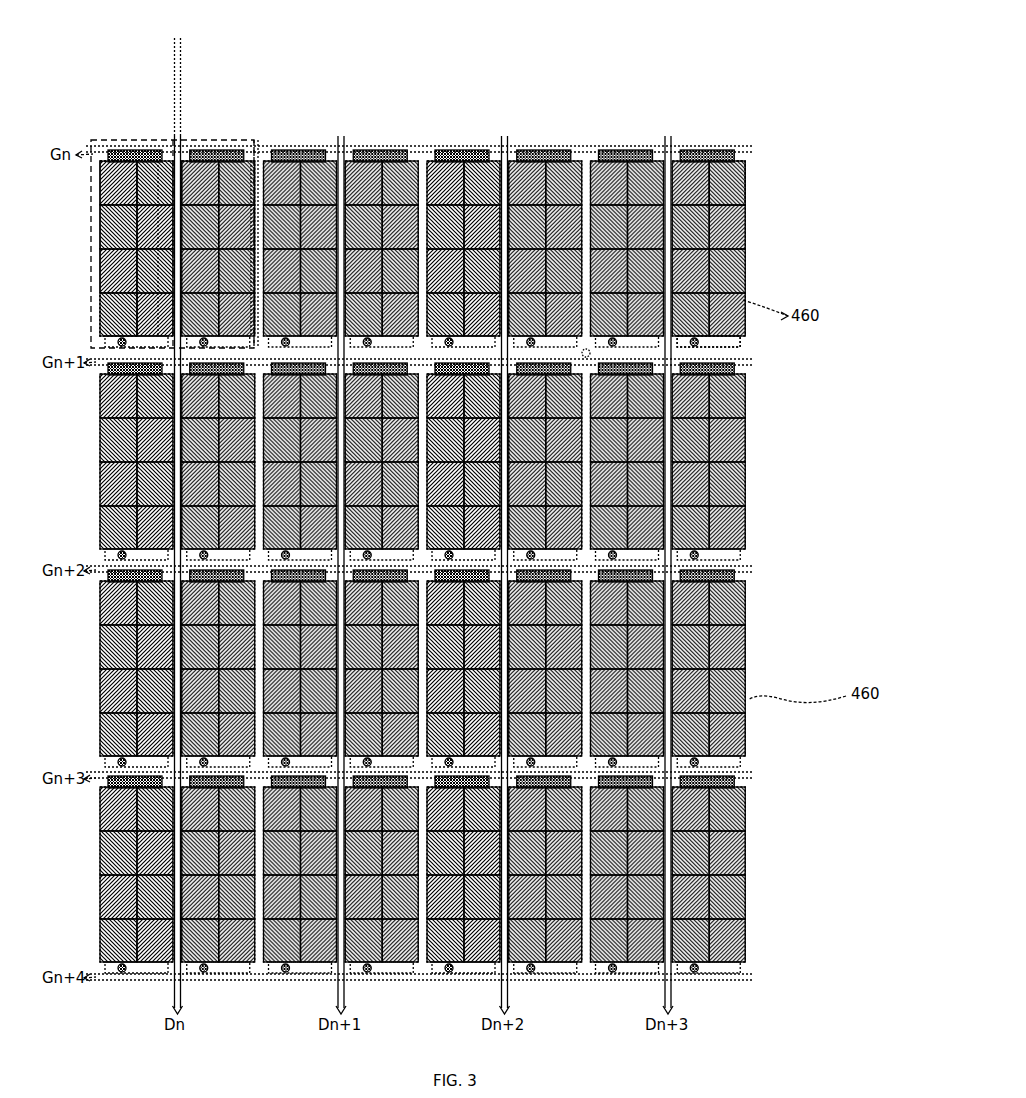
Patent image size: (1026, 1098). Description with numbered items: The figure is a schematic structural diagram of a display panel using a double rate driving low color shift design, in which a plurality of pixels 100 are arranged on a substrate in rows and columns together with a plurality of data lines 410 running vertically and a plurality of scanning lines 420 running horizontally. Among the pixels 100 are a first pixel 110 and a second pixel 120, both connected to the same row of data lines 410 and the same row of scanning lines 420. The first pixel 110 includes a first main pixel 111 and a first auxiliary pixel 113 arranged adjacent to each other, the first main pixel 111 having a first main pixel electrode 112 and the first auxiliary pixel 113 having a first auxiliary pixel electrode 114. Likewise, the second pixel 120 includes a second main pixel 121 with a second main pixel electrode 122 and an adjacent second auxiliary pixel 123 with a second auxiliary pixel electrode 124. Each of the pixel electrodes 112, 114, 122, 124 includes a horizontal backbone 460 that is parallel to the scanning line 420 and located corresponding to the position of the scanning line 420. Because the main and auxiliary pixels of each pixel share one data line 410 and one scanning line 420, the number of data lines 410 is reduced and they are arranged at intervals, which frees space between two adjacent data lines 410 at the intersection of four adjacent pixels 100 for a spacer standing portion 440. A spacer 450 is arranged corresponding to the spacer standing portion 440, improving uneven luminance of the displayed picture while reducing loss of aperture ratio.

The pixel 100 is at (252, 134).
The first pixel 110 is at (152, 60).
The first main pixel 111 is at (118, 132).
The first main pixel electrode 112 is at (90, 200).
The first auxiliary pixel 113 is at (155, 152).
The first auxiliary pixel electrode 114 is at (90, 268).
The second pixel 120 is at (236, 52).
The second main pixel 121 is at (197, 132).
The second main pixel electrode 122 is at (175, 36).
The second auxiliary pixel 123 is at (243, 150).
The second auxiliary pixel electrode 124 is at (160, 300).
The data line 410 is at (335, 128).
The scanning line 420 is at (737, 140).
The spacer standing portion 440 is at (580, 343).
The spacer 450 is at (640, 332).
The horizontal backbone 460 is at (705, 192).